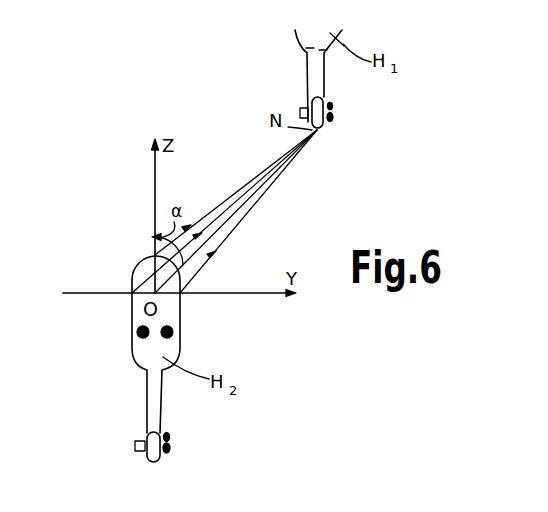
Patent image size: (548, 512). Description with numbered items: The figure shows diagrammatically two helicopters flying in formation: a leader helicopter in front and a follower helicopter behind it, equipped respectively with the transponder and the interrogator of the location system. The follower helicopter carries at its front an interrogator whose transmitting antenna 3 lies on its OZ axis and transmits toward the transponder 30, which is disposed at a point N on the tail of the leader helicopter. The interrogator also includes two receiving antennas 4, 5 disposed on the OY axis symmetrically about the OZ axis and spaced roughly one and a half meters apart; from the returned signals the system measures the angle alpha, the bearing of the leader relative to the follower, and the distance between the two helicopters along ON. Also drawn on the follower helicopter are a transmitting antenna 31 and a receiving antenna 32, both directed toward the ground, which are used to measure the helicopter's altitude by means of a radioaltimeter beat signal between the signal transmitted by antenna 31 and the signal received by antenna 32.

The transmitting antenna 3 is at (158, 256).
The receiving antenna 4 is at (183, 294).
The receiving antenna 5 is at (131, 288).
The transponder 30 is at (322, 129).
The transmitting antenna 31 is at (137, 332).
The receiving antenna 32 is at (173, 332).